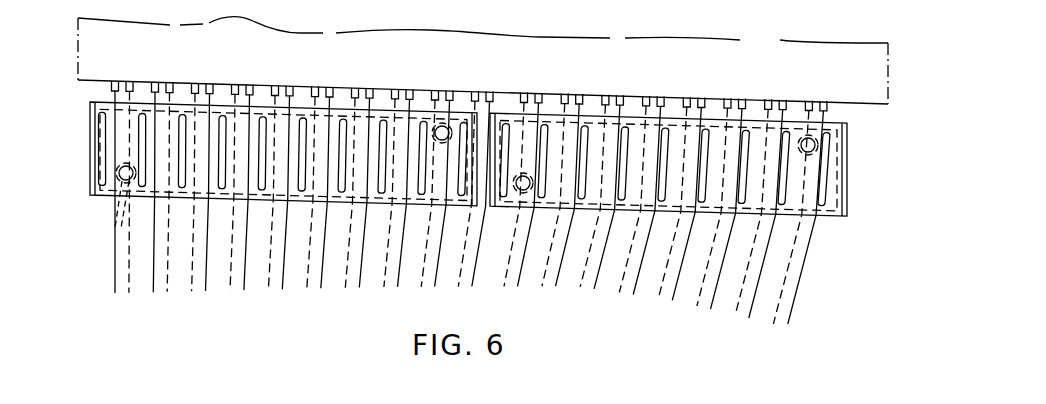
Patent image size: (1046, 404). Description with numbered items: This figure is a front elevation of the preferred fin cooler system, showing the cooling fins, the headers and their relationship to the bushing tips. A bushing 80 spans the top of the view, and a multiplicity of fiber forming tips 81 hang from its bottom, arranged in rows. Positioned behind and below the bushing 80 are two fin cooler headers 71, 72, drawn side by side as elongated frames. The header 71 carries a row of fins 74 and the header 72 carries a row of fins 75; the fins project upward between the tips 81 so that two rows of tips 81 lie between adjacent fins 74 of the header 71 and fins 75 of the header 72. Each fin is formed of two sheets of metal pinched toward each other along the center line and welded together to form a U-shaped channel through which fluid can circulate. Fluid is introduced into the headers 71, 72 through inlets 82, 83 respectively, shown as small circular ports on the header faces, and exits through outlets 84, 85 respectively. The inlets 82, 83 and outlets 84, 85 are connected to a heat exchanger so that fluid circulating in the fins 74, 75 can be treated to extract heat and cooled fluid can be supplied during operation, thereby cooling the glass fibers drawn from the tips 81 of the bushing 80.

The fin cooler header 71 is at (833, 216).
The fin cooler header 72 is at (98, 198).
The fins 74 is at (832, 181).
The fins 75 is at (100, 152).
The bushing 80 is at (888, 82).
The fiber forming tips 81 is at (830, 112).
The inlet 82 is at (534, 95).
The inlet 83 is at (118, 227).
The outlet 84 is at (817, 153).
The outlet 85 is at (437, 122).